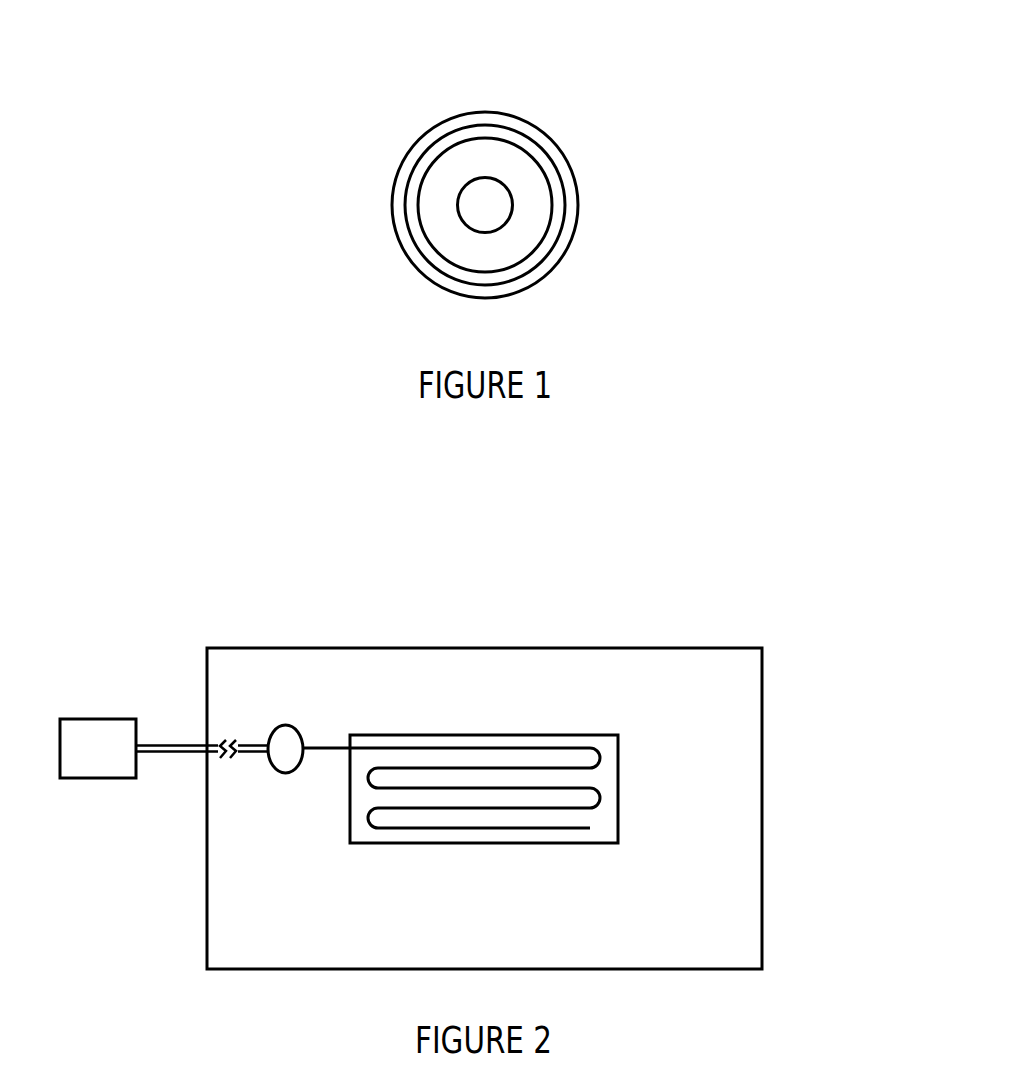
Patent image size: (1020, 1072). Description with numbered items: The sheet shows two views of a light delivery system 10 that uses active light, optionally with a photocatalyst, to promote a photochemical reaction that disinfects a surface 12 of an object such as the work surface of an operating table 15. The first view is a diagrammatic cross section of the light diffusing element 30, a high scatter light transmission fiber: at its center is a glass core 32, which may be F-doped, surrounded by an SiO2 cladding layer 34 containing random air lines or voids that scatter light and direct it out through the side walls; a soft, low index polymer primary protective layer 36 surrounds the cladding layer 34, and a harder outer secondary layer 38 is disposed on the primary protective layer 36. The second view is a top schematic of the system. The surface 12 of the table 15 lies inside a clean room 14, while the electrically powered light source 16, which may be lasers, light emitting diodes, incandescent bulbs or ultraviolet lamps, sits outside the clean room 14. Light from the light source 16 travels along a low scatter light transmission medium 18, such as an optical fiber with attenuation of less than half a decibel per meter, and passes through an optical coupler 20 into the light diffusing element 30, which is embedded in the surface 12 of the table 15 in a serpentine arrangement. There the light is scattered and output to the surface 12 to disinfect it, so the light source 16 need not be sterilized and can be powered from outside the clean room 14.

In FIG. 2, the light delivery system 10 is at (186, 542).
In FIG. 2, the surface 12 is at (565, 745).
In FIG. 2, the clean room 14 is at (704, 648).
In FIG. 2, the table 15 is at (430, 732).
In FIG. 2, the light source 16 is at (97, 727).
In FIG. 2, the low scatter light transmission medium 18 is at (183, 755).
In FIG. 2, the optical coupler 20 is at (287, 725).
In FIG. 1, the light diffusing element 30 is at (502, 100).
In FIG. 2, the light diffusing element 30 is at (600, 757).
In FIG. 1, the glass core 32 is at (483, 205).
In FIG. 1, the cladding layer 34 is at (525, 192).
In FIG. 1, the primary protective layer 36 is at (550, 232).
In FIG. 1, the secondary layer 38 is at (550, 260).